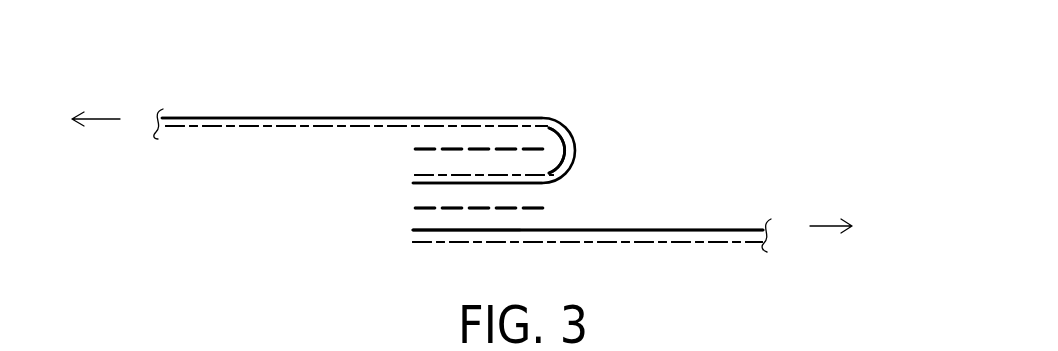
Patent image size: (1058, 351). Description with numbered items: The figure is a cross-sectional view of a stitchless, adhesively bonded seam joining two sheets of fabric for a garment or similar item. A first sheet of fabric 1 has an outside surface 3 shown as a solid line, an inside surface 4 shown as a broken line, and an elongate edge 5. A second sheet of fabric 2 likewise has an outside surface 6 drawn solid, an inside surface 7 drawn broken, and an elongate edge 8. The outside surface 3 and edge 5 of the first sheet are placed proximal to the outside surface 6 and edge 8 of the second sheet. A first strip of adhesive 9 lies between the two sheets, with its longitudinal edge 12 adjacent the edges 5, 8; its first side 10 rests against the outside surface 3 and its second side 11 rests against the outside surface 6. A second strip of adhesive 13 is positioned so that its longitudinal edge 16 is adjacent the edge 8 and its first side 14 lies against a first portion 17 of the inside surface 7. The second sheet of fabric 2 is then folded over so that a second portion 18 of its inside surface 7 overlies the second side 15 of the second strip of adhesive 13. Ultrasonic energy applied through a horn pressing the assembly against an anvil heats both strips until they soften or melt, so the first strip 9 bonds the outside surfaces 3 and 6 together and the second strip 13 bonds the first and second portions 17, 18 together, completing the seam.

The first sheet of fabric 1 is at (702, 270).
The second sheet of fabric 2 is at (233, 103).
The outside surface 3 is at (588, 227).
The inside surface 4 is at (663, 245).
The edge 5 is at (410, 238).
The outside surface 6 is at (350, 114).
The inside surface 7 is at (350, 129).
The edge 8 is at (407, 180).
The first strip of adhesive 9 is at (533, 199).
The first side 10 is at (533, 216).
The second side 11 is at (493, 196).
The longitudinal edge 12 is at (408, 208).
The second strip of adhesive 13 is at (540, 143).
The first side 14 is at (442, 160).
The second side 15 is at (422, 138).
The longitudinal edge 16 is at (407, 148).
The first portion 17 is at (538, 163).
The second portion 18 is at (498, 138).